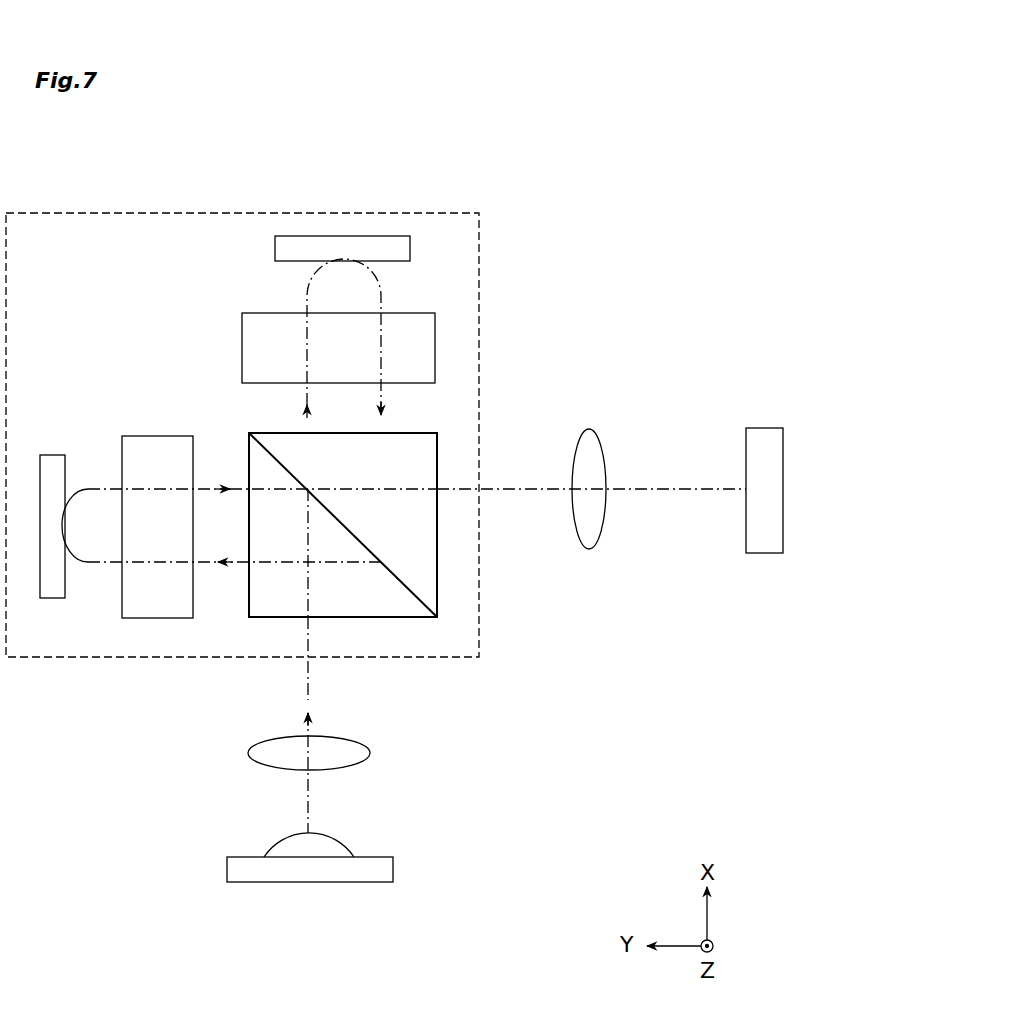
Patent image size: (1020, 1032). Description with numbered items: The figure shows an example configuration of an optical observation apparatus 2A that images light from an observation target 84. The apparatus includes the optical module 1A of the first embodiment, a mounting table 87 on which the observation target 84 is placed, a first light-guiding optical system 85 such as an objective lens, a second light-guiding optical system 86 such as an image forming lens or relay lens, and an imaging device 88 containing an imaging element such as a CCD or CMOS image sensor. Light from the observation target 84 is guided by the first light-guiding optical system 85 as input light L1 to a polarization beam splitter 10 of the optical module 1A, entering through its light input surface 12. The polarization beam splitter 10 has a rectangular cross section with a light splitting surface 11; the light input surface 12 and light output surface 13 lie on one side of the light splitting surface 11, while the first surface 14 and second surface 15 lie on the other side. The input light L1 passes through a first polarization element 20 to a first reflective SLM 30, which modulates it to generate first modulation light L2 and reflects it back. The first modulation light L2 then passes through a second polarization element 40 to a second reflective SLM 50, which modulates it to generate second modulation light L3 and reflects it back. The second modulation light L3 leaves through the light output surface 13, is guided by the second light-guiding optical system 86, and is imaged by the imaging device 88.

The optical module 1A is at (218, 213).
The optical observation apparatus 2A is at (628, 170).
The polarization beam splitter 10 is at (441, 450).
The light splitting surface 11 is at (389, 571).
The light input surface 12 is at (405, 617).
The light output surface 13 is at (437, 597).
The first surface 14 is at (272, 433).
The second surface 15 is at (249, 598).
The first polarization element 20 is at (242, 345).
The first reflective SLM 30 is at (272, 247).
The second polarization element 40 is at (153, 433).
The second reflective SLM 50 is at (51, 455).
The observation target 84 is at (328, 842).
The first light-guiding optical system 85 is at (370, 753).
The second light-guiding optical system 86 is at (589, 549).
The mounting table 87 is at (396, 870).
The imaging device 88 is at (765, 553).
The input light L1 is at (306, 806).
The first modulation light L2 is at (381, 296).
The second modulation light L3 is at (110, 486).